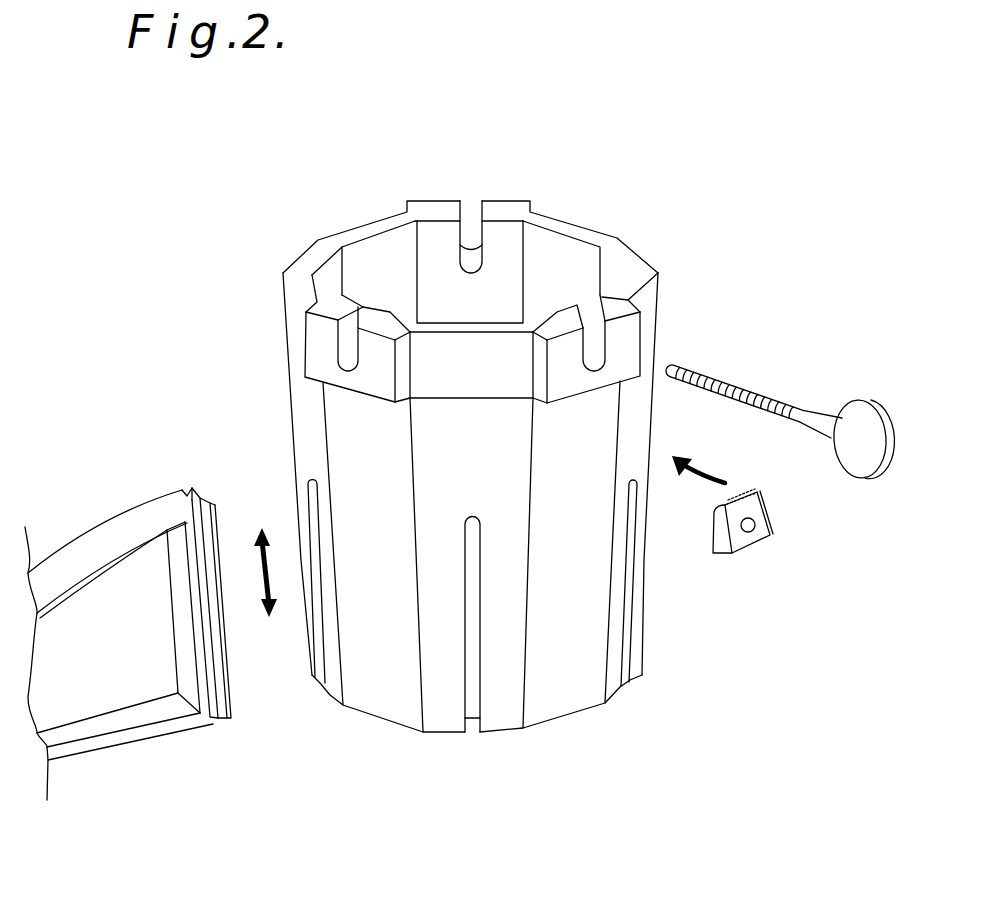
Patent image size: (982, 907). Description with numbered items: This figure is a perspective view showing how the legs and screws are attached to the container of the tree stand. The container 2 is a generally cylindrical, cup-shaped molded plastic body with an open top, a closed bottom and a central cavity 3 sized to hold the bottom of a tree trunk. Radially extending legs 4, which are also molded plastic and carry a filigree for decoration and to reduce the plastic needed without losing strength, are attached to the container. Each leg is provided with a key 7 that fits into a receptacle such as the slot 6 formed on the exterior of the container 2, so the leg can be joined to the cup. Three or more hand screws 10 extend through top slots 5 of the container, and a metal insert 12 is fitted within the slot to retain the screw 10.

The container 2 is at (638, 250).
The central cavity 3 is at (385, 268).
The legs 4 is at (67, 552).
The top slots 5 is at (468, 222).
The slot 6 is at (318, 627).
The key 7 is at (200, 483).
The hand screws 10 is at (740, 388).
The metal insert 12 is at (767, 508).